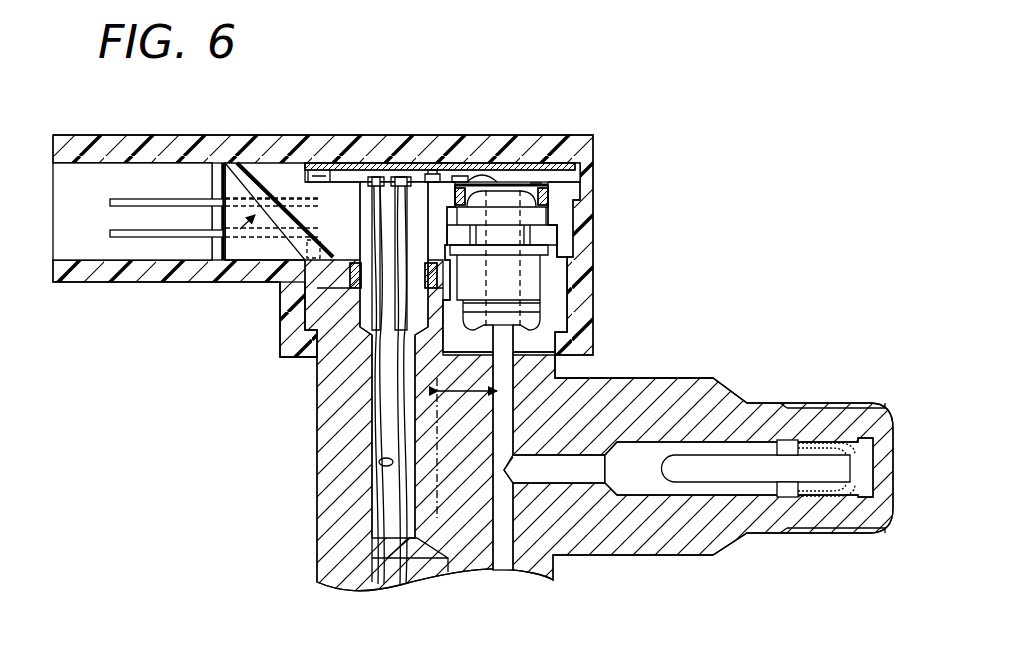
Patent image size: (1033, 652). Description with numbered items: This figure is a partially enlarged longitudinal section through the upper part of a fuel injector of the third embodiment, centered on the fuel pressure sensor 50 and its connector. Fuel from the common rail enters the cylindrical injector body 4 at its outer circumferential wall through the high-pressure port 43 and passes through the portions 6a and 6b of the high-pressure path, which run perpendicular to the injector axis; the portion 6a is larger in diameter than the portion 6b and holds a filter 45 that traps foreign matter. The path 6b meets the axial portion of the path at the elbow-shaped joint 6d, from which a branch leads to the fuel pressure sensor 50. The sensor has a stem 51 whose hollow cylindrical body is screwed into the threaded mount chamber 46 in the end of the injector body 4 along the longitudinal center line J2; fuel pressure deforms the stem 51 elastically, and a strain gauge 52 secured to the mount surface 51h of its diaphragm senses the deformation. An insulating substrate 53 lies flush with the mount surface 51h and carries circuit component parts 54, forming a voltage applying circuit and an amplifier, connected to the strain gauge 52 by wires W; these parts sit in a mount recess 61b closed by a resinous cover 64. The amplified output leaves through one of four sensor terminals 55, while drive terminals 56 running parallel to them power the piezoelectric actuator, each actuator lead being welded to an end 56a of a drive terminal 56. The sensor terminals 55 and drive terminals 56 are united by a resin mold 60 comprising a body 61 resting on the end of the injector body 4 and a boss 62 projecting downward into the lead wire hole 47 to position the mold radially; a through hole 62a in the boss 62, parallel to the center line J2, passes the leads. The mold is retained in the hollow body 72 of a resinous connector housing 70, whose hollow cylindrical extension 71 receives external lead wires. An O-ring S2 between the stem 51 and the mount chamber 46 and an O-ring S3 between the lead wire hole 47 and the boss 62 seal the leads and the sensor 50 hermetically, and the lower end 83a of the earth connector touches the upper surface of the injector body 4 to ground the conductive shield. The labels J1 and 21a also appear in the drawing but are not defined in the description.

The injector body 4 is at (332, 551).
The high-pressure path portion 6a is at (648, 483).
The high-pressure path portion 6b is at (577, 476).
The joint 6d is at (575, 378).
The high-pressure port 43 is at (683, 505).
The filter 45 is at (718, 483).
The mount chamber 46 is at (567, 282).
The lead wire hole 47 is at (380, 462).
The fuel pressure sensor 50 is at (560, 182).
The stem 51 is at (557, 291).
The mount surface 51h is at (536, 180).
The strain gauge 52 is at (495, 186).
The insulating substrate 53 is at (452, 180).
The circuit component parts 54 is at (432, 172).
The wires W is at (480, 176).
The sensor terminals 55 is at (113, 240).
The drive terminals 56 is at (150, 197).
The ends of drive terminals 56a is at (380, 177).
The resin mold 60 is at (222, 238).
The body 61 is at (243, 250).
The mount recess 61b is at (318, 163).
The boss 62 is at (345, 350).
The through hole 62a is at (375, 385).
The resinous cover 64 is at (337, 182).
The connector housing 70 is at (58, 286).
The hollow cylindrical extension 71 is at (80, 283).
The hollow body 72 is at (248, 136).
The lower end of earth connector 83a is at (292, 272).
The O-ring S2 is at (550, 197).
The O-ring S3 is at (290, 327).
The passage dimension J1 is at (503, 447).
The longitudinal center line J2 is at (467, 439).
The terminal pin 21a is at (405, 177).